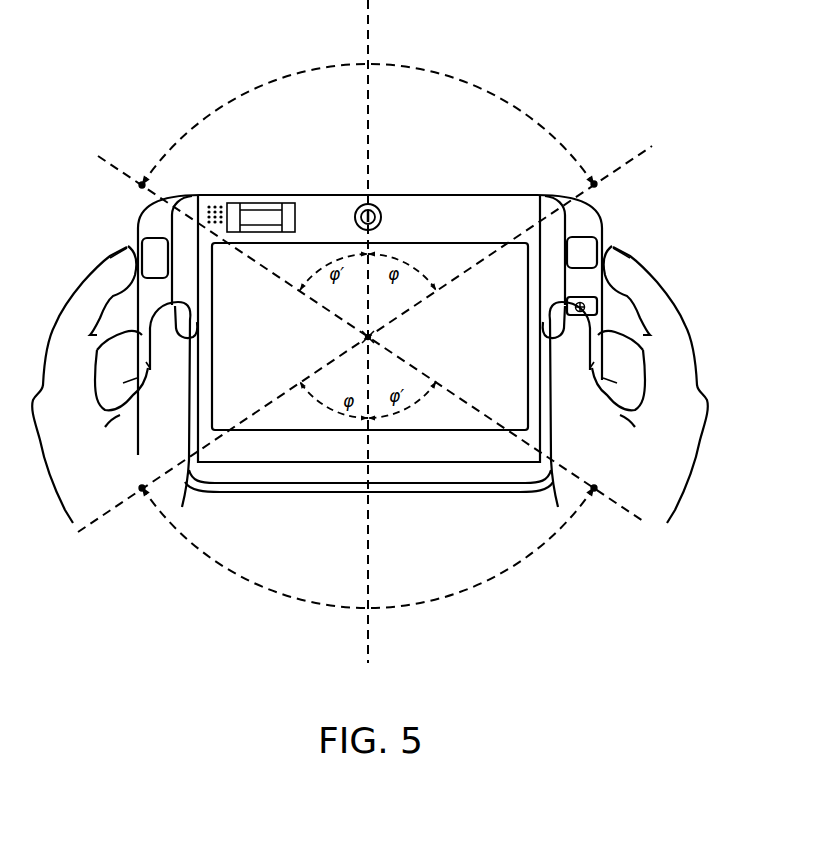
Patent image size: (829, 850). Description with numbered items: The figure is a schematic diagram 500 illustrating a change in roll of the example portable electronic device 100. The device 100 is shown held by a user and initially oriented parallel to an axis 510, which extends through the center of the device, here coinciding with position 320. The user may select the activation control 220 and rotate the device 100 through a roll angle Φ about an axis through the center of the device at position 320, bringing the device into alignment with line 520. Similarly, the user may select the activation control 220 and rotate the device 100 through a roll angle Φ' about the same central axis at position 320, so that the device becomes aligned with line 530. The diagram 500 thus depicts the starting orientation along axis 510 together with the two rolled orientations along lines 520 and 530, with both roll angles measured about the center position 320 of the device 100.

The schematic diagram 500 is at (615, 81).
The axis 510 is at (371, 30).
The line 520 is at (618, 168).
The line 530 is at (123, 171).
The portable electronic device 100 is at (450, 195).
The activation control 220 is at (158, 253).
The position 320 is at (375, 337).